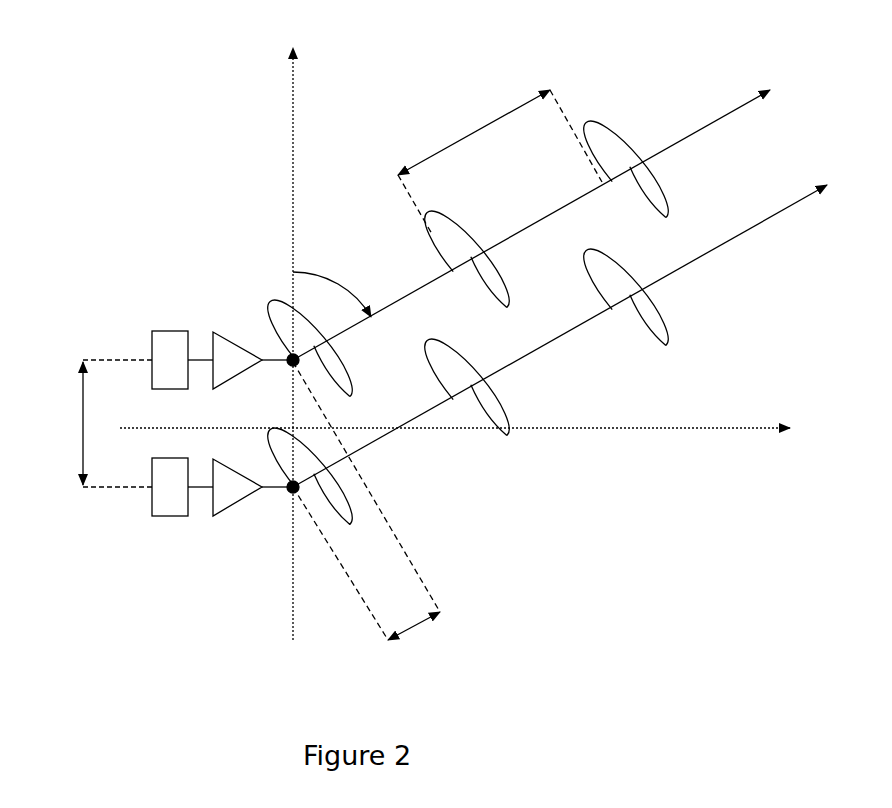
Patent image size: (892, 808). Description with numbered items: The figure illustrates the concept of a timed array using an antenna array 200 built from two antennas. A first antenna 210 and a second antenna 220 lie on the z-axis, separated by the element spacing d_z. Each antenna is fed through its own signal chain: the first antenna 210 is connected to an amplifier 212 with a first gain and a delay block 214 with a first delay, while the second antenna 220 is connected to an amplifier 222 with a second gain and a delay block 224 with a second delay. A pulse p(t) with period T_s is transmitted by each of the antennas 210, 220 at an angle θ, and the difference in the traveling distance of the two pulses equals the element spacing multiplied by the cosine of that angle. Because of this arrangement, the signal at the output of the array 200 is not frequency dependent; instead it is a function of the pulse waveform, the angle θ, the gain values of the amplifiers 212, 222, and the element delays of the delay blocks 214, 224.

The antenna array 200 is at (150, 117).
The first antenna 210 is at (288, 352).
The amplifier 212 is at (215, 332).
The delay block 214 is at (152, 338).
The second antenna 220 is at (288, 500).
The amplifier 222 is at (223, 516).
The delay block 224 is at (152, 517).